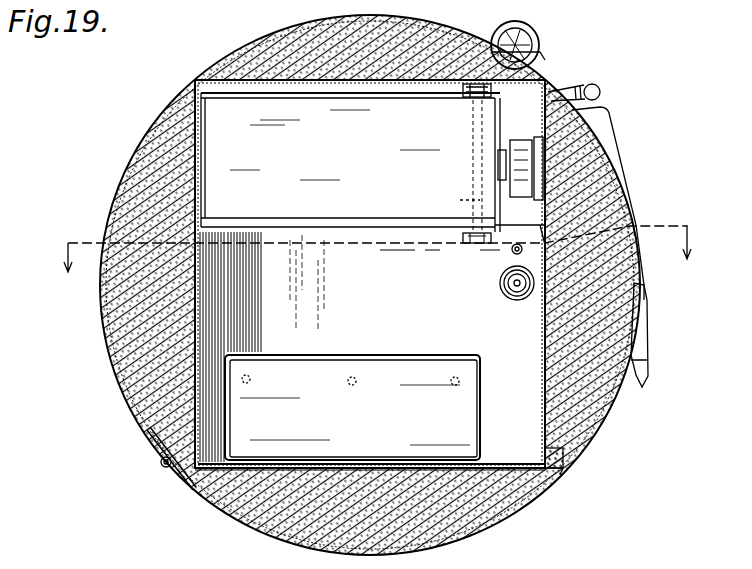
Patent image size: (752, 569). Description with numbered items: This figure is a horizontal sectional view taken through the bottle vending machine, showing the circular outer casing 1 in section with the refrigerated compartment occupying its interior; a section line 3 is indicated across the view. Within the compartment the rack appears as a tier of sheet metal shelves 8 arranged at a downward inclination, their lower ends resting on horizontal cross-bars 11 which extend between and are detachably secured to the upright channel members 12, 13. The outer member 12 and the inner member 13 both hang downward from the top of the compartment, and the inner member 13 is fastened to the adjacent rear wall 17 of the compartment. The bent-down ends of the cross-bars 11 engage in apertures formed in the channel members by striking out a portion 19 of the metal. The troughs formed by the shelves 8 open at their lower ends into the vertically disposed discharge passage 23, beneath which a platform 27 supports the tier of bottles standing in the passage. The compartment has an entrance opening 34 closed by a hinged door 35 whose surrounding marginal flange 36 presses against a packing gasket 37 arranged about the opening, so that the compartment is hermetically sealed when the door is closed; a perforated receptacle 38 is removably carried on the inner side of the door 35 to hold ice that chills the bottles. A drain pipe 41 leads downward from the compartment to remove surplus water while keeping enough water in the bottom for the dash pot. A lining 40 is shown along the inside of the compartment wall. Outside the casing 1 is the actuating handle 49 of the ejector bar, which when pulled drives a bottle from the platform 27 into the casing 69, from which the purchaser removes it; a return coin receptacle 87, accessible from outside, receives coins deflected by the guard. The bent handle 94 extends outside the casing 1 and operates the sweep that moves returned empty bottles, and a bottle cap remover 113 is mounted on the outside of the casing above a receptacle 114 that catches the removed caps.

The casing 1 is at (605, 400).
The section line 3 is at (373, 243).
The sheet metal shelves 8 is at (350, 160).
The horizontal cross-bars 11 is at (454, 198).
The outer upright channel member 12 is at (468, 243).
The inner upright channel member 13 is at (470, 90).
The rear wall 17 is at (357, 84).
The struck-out portion 19 is at (492, 97).
The discharge passage 23 is at (520, 171).
The platform 27 is at (508, 152).
The entrance opening 34 is at (512, 465).
The hinged door 35 is at (276, 532).
The marginal flange 36 is at (555, 472).
The packing gasket 37 is at (563, 468).
The perforated receptacle 38 is at (480, 365).
The corrugated panel 40 is at (150, 386).
The drain pipe 41 is at (512, 253).
The actuating handle 49 is at (600, 88).
The casing 69 is at (612, 158).
The return coin receptacle 87 is at (600, 100).
The bent handle 94 is at (641, 345).
The bottle cap remover 113 is at (527, 27).
The receptacle 114 is at (547, 47).